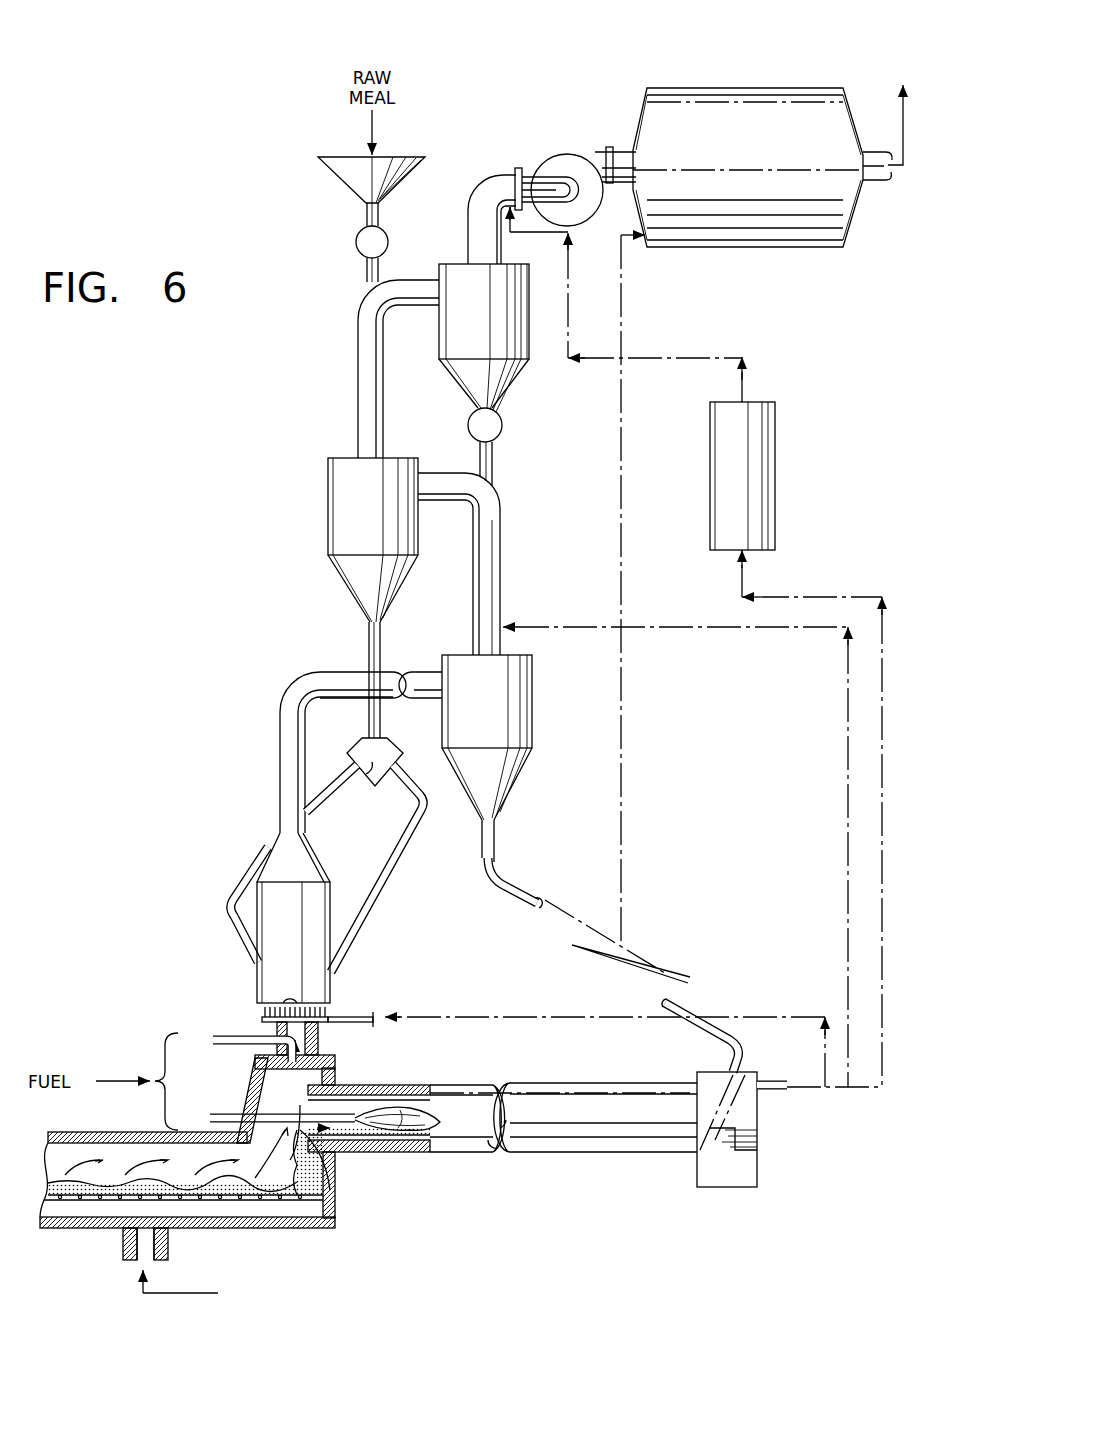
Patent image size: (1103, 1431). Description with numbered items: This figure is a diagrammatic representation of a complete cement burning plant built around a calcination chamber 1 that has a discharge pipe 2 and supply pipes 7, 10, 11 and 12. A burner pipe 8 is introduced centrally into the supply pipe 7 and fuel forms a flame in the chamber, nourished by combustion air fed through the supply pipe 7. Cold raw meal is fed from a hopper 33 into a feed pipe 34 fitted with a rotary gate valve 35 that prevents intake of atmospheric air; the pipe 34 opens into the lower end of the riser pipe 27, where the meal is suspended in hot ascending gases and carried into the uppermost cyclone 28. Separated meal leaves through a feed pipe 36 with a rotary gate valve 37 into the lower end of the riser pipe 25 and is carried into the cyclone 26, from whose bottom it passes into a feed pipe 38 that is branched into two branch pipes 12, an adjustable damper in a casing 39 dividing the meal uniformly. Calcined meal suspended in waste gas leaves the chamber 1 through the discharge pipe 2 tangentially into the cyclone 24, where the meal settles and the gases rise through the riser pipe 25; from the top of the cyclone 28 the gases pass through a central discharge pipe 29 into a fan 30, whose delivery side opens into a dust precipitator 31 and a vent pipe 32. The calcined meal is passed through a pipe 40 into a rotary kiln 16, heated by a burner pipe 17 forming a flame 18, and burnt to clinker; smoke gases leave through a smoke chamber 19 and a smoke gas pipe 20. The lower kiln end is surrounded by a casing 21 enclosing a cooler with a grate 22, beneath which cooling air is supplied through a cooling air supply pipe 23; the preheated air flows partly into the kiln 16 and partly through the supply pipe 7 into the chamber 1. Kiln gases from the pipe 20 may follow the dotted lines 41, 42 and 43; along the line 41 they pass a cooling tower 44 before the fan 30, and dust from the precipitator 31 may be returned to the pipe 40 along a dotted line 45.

The chamber 1 is at (323, 872).
The discharge pipe 2 is at (280, 768).
The supply pipe 7 is at (328, 1048).
The burner pipe 8 is at (238, 1038).
The supply pipe 10 is at (300, 1002).
The supply pipe 11 is at (363, 1016).
The branch pipes 12 is at (242, 880).
The rotary kiln 16 is at (550, 1090).
The burner pipe 17 is at (230, 1115).
The flame 18 is at (420, 1138).
The smoke chamber 19 is at (708, 1172).
The smoke gas pipe 20 is at (774, 1090).
The casing 21 is at (100, 1132).
The grate 22 is at (107, 1196).
The cooling air supply pipe 23 is at (168, 1246).
The cyclone 24 is at (530, 728).
The riser pipe 25 is at (500, 560).
The cyclone 26 is at (332, 496).
The riser pipe 27 is at (359, 386).
The cyclone 28 is at (458, 334).
The central discharge pipe 29 is at (492, 185).
The fan 30 is at (565, 164).
The dust precipitator 31 is at (736, 96).
The vent pipe 32 is at (875, 182).
The hopper 33 is at (340, 170).
The feed pipe 34 is at (366, 282).
The rotary gate valve 35 is at (389, 240).
The feed pipe 36 is at (481, 466).
The rotary gate valve 37 is at (503, 425).
The feed pipe 38 is at (370, 650).
The casing 39 is at (377, 777).
The pipe 40 is at (522, 886).
The dotted line 41 is at (884, 800).
The dotted line 42 is at (840, 760).
The dotted line 43 is at (532, 1017).
The cooling tower 44 is at (762, 480).
The dotted line 45 is at (622, 702).